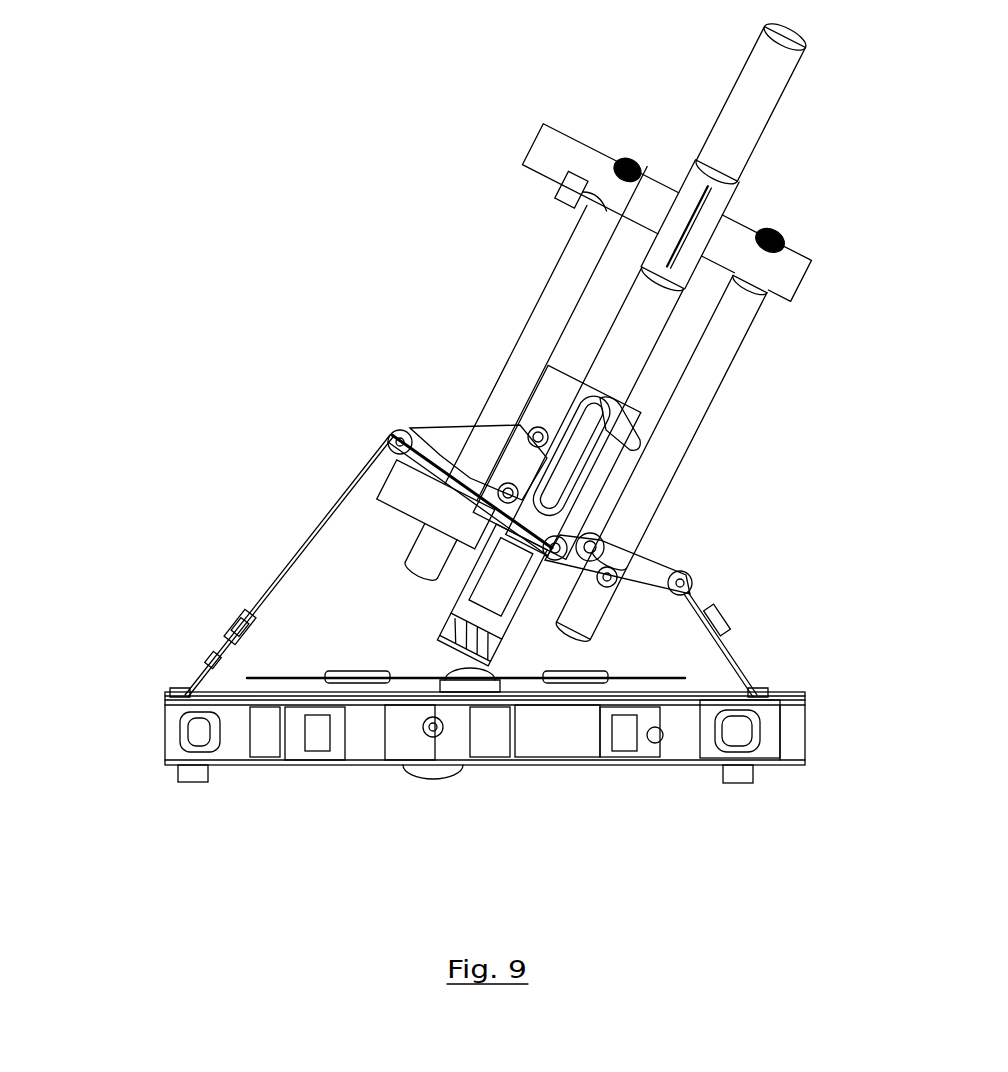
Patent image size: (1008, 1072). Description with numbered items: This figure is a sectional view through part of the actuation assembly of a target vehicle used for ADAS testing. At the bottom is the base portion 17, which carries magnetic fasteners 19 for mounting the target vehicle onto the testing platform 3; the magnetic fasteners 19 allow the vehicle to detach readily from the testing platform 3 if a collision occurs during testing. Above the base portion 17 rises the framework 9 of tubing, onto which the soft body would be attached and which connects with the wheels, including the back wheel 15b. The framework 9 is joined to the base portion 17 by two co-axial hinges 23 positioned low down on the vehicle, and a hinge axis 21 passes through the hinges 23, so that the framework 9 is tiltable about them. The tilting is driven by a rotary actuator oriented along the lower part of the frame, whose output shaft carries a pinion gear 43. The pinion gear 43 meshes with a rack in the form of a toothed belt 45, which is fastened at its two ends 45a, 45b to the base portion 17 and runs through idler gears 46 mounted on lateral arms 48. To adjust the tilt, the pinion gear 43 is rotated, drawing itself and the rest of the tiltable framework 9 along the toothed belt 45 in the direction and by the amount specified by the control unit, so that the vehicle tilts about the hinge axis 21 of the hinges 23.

The framework of tubing 9 is at (605, 312).
The back wheel 15b is at (612, 403).
The lateral arm 48 is at (468, 428).
The toothed belt 45 is at (452, 460).
The idler gear 46 is at (382, 437).
The pinion gear 43 is at (604, 541).
The end of toothed belt 45a is at (178, 690).
The end of toothed belt 45b is at (762, 689).
The testing platform 3 is at (160, 740).
The base portion 17 is at (732, 703).
The magnetic fastener 19 is at (350, 666).
The hinge 23 is at (452, 630).
The hinge axis 21 is at (452, 657).